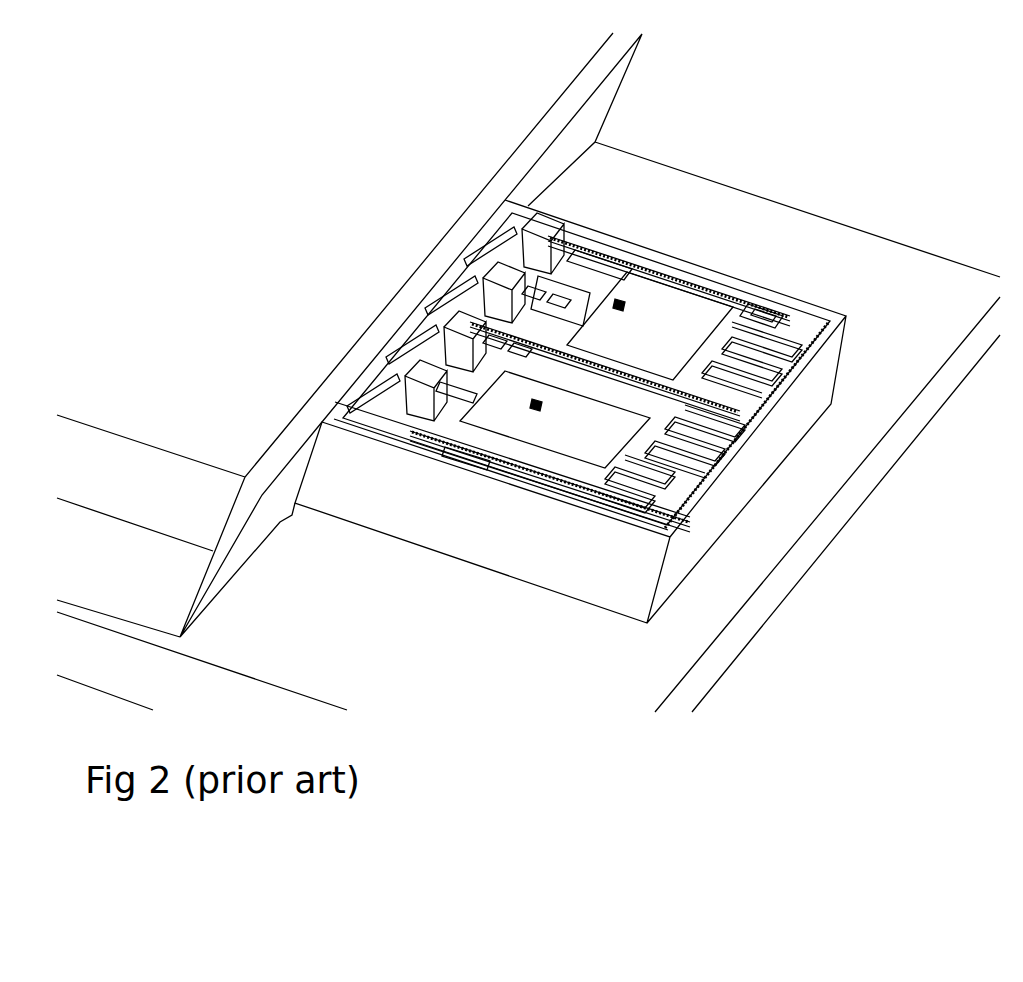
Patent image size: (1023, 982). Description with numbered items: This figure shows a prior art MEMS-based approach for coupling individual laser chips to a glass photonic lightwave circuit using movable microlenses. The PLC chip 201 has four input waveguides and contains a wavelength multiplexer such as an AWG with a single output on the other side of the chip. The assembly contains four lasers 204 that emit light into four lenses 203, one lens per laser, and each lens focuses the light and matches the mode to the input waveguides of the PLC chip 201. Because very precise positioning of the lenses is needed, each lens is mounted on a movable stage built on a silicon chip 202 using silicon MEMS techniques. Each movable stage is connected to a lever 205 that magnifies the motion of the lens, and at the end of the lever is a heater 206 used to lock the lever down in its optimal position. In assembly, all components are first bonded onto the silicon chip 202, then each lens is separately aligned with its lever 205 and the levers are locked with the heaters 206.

The PLC chip 201 is at (349, 335).
The silicon chip 202 is at (570, 411).
The lens 203 is at (556, 228).
The laser 204 is at (582, 240).
The lever 205 is at (670, 270).
The heater 206 is at (762, 315).